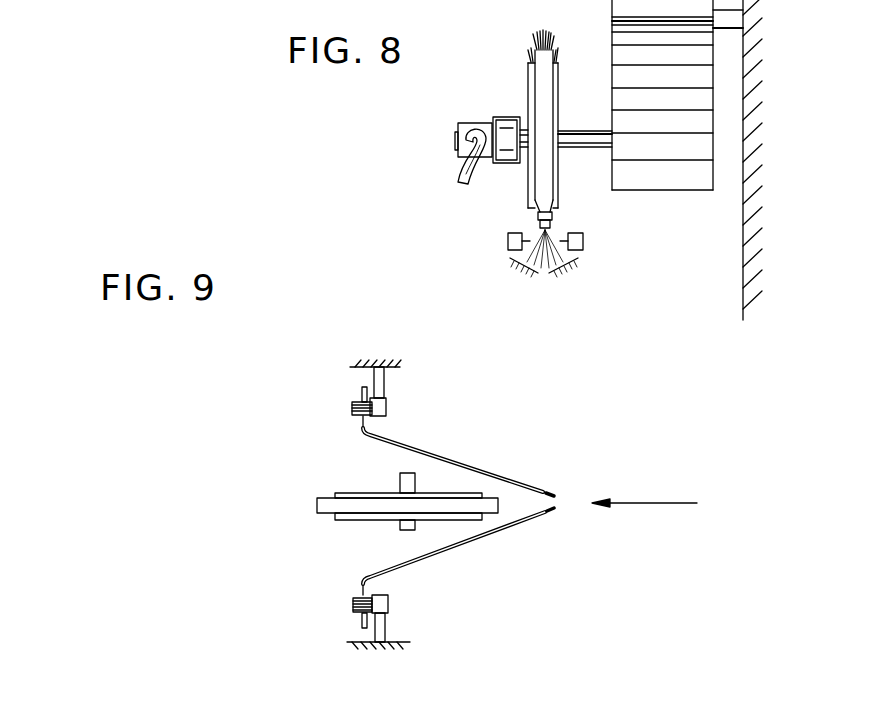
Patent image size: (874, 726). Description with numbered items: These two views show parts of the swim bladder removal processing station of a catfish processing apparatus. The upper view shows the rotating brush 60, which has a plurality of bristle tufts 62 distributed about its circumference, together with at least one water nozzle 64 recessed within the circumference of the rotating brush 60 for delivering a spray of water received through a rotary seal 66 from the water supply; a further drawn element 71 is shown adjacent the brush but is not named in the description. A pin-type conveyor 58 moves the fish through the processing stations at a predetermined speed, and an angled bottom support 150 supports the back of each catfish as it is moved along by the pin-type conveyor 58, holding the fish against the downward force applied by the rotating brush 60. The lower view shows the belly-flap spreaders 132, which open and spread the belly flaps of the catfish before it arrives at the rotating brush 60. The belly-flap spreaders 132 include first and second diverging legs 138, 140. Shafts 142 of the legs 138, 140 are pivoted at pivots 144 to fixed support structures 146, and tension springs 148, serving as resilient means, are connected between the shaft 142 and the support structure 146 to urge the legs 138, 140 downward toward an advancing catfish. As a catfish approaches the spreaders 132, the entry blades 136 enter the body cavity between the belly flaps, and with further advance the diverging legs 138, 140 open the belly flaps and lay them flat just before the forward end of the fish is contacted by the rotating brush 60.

In FIG. 8, the pin-type conveyor 58 is at (505, 243).
In FIG. 8, the rotating brush 60 is at (543, 95).
In FIG. 8, the bristle tufts 62 is at (534, 56).
In FIG. 8, the water nozzles 64 is at (553, 218).
In FIG. 8, the rotary seal 66 is at (475, 123).
In FIG. 8, the spindle block 71 is at (668, 180).
In FIG. 8, the angled bottom support 150 is at (568, 272).
In FIG. 9, the belly-flap spreaders 132 is at (620, 413).
In FIG. 9, the entry blades 136 is at (552, 490).
In FIG. 9, the first diverging leg 138 is at (447, 556).
In FIG. 9, the second diverging leg 140 is at (460, 458).
In FIG. 9, the shafts 142 is at (358, 582).
In FIG. 9, the pivots 144 is at (388, 405).
In FIG. 9, the fixed support structures 146 is at (345, 363).
In FIG. 9, the tension springs 148 is at (352, 600).